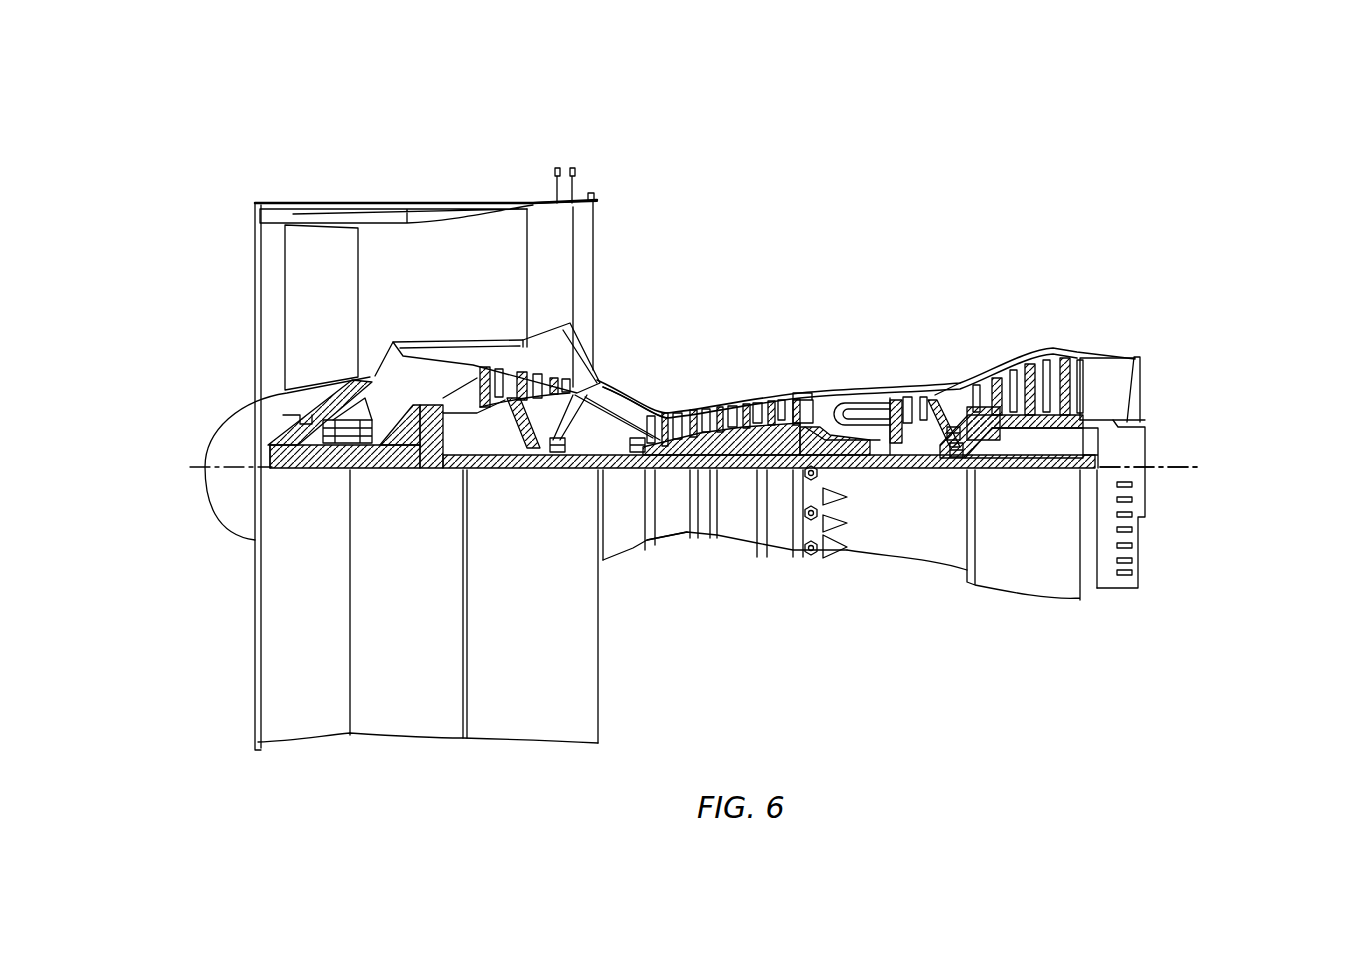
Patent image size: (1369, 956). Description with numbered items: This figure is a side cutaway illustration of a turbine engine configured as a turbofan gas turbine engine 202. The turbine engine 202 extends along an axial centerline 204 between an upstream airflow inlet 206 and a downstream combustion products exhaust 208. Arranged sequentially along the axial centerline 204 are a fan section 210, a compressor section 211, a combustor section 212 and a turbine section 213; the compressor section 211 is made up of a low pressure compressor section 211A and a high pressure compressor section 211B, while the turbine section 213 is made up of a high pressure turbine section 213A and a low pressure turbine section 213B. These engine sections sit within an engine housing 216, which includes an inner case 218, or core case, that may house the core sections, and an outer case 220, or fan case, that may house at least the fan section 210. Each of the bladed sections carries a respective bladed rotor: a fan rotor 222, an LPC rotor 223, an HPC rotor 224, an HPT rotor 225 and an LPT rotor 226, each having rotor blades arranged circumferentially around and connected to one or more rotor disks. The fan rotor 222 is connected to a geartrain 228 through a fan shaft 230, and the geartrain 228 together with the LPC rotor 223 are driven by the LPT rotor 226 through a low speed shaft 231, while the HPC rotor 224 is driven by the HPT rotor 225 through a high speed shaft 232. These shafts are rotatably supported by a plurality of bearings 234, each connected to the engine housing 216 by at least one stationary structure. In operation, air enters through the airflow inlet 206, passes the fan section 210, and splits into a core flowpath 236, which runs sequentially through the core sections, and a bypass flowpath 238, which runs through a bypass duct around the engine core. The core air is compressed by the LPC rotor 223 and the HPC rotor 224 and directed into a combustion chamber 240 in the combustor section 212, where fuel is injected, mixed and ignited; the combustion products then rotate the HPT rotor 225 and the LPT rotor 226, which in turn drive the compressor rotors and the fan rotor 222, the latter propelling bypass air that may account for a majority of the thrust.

The turbofan gas turbine engine 202 is at (187, 150).
The axial centerline 204 is at (1185, 470).
The upstream airflow inlet 206 is at (255, 288).
The downstream combustion products exhaust 208 is at (1140, 375).
The fan section 210 is at (402, 198).
The compressor section 211 is at (783, 135).
The low pressure compressor (LPC) section 211A is at (601, 181).
The high pressure compressor (HPC) section 211B is at (782, 341).
The combustor section 212 is at (883, 341).
The turbine section 213 is at (1107, 285).
The high pressure turbine (HPT) section 213A is at (953, 341).
The low pressure turbine (LPT) section 213B is at (1107, 341).
The engine housing 216 is at (617, 573).
The inner case 218 is at (777, 550).
The outer case 220 is at (563, 745).
The fan rotor 222 is at (280, 410).
The LPC rotor 223 is at (518, 423).
The HPC rotor 224 is at (748, 470).
The HPT rotor 225 is at (910, 450).
The LPT rotor 226 is at (1027, 420).
The geartrain 228 is at (433, 462).
The fan shaft 230 is at (288, 462).
The low speed shaft 231 is at (1060, 470).
The high speed shaft 232 is at (848, 450).
The bearings 234 is at (365, 442).
The core flowpath 236 is at (617, 398).
The bypass flowpath 238 is at (470, 294).
The combustion chamber 240 is at (850, 417).